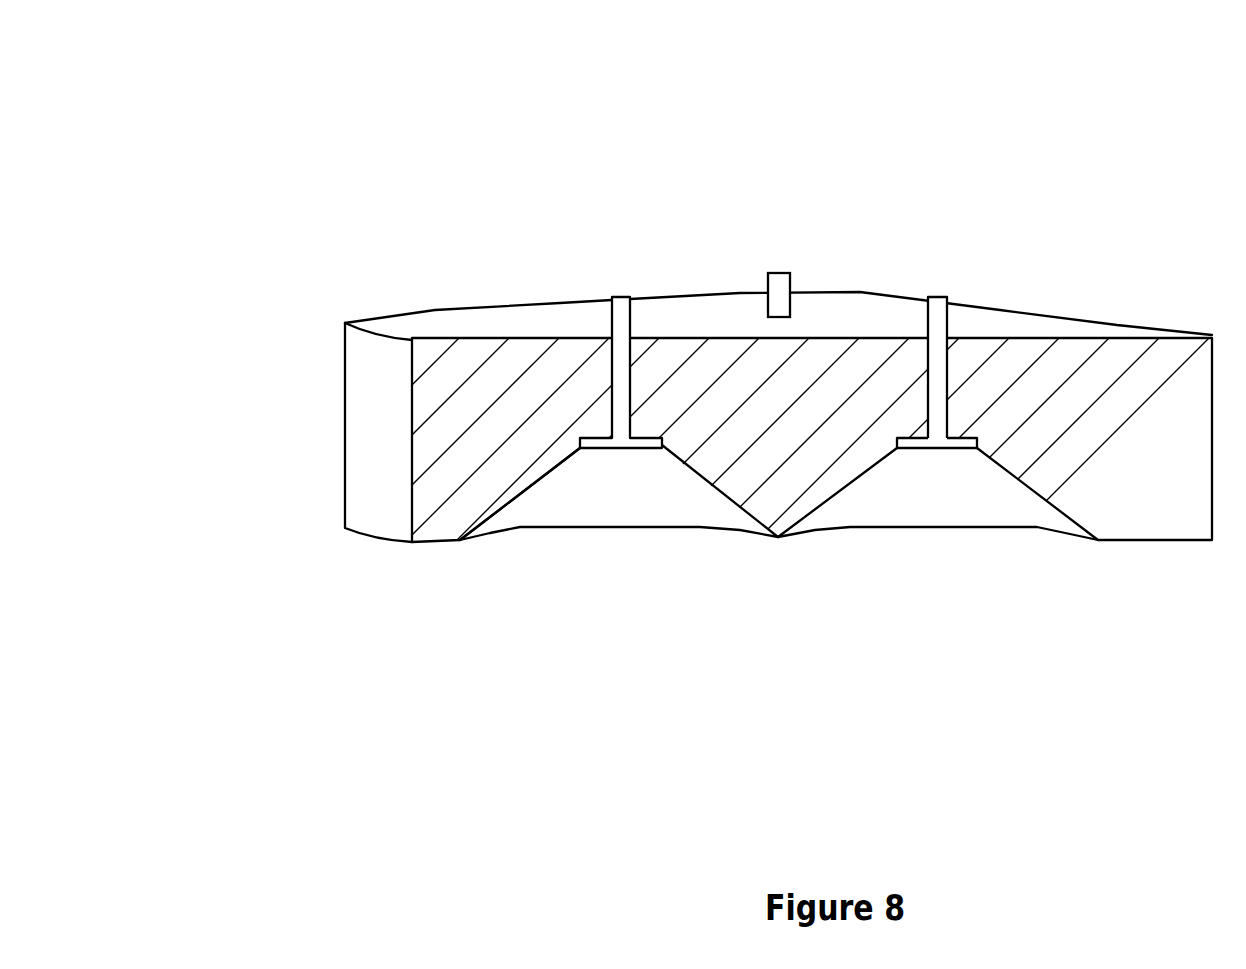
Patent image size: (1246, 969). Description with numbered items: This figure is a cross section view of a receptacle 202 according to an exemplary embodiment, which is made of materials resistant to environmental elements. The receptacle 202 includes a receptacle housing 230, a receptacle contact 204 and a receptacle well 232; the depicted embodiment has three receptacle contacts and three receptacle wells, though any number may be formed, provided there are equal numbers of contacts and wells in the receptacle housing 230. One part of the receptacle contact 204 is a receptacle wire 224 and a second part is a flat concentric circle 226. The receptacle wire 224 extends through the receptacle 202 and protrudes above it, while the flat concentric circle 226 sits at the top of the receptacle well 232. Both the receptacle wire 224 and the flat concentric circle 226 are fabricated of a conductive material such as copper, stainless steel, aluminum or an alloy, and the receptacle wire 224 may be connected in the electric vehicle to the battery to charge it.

The receptacle 202 is at (707, 303).
The receptacle contact 204 is at (780, 235).
The receptacle wire 224 is at (947, 318).
The flat concentric circle 226 is at (968, 448).
The receptacle housing 230 is at (805, 406).
The receptacle well 232 is at (573, 512).